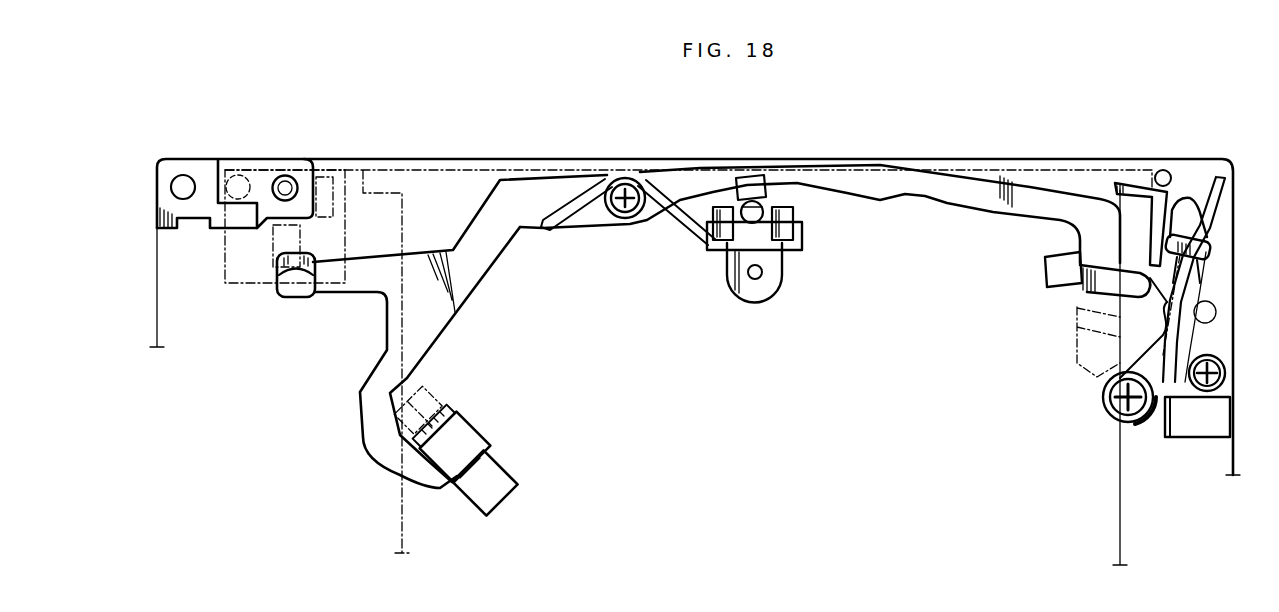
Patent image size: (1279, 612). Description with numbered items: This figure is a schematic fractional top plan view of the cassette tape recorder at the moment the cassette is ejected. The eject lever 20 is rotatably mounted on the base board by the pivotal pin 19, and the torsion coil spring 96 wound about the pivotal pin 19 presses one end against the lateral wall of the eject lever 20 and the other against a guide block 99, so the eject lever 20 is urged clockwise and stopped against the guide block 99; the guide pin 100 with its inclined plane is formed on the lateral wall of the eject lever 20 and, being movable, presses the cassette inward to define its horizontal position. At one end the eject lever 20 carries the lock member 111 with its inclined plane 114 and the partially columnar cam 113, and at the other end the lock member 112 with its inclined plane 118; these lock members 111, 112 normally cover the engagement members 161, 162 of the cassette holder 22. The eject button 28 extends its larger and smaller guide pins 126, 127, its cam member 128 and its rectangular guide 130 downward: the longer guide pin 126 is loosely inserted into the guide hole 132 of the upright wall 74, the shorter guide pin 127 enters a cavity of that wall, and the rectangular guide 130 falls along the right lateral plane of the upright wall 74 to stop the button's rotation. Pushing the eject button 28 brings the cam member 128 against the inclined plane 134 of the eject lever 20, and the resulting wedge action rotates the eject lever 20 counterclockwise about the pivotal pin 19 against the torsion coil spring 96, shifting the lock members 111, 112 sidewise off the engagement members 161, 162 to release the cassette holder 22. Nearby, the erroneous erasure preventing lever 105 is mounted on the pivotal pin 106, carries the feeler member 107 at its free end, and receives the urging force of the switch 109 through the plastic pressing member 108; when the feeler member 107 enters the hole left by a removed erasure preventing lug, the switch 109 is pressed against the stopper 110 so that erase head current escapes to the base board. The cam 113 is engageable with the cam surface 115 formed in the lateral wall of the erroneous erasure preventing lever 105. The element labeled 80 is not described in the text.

The pivotal pin 19 is at (618, 180).
The eject lever 20 is at (972, 208).
The cassette holder 22 is at (1121, 483).
The eject button 28 is at (346, 208).
The upright wall 74 is at (268, 165).
The frame tab 80 is at (198, 228).
The torsion coil spring 96 is at (560, 218).
The guide block 99 is at (796, 213).
The guide pin 100 is at (752, 180).
The erroneous erasure preventing lever 105 is at (1158, 415).
The pivotal pin 106 is at (1104, 403).
The feeler member 107 is at (1130, 197).
The pressing member 108 is at (1183, 200).
The switch 109 is at (1226, 213).
The stopper 110 is at (1162, 170).
The lock member 111 is at (1085, 290).
The lock member 112 is at (484, 436).
The cam 113 is at (1166, 285).
The inclined plane 114 is at (1140, 290).
The cam surface 115 is at (1160, 313).
The inclined plane 118 is at (456, 425).
The guide pin 126 is at (280, 197).
The guide pin 127 is at (238, 176).
The cam member 128 is at (292, 246).
The rectangular guide 130 is at (325, 180).
The guide hole 132 is at (292, 180).
The inclined plane 134 is at (283, 270).
The engagement member 161 is at (1076, 314).
The engagement member 162 is at (430, 400).